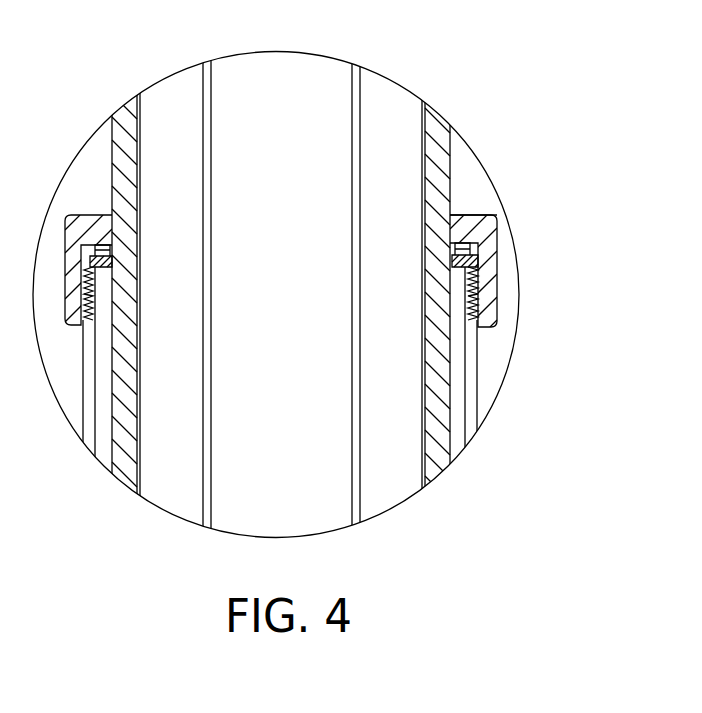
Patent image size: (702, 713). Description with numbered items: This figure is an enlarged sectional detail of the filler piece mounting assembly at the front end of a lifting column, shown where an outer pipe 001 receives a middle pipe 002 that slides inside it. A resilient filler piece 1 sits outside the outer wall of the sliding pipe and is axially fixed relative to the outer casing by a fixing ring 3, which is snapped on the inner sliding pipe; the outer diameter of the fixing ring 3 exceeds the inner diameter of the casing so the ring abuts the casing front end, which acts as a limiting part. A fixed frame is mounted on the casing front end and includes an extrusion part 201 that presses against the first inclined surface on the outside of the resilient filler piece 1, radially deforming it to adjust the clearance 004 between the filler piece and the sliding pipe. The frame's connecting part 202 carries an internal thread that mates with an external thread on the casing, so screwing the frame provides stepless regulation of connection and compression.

The outer pipe 001 is at (92, 430).
The middle pipe 002 is at (160, 140).
The clearance 004 is at (458, 420).
The resilient filler piece 1 is at (527, 219).
The extrusion part 201 is at (460, 228).
The connecting part 202 is at (478, 296).
The fixing ring 3 is at (472, 253).